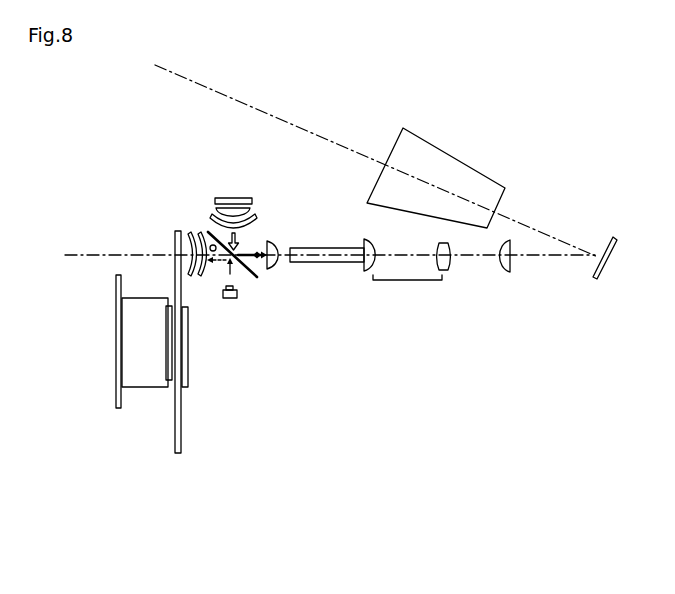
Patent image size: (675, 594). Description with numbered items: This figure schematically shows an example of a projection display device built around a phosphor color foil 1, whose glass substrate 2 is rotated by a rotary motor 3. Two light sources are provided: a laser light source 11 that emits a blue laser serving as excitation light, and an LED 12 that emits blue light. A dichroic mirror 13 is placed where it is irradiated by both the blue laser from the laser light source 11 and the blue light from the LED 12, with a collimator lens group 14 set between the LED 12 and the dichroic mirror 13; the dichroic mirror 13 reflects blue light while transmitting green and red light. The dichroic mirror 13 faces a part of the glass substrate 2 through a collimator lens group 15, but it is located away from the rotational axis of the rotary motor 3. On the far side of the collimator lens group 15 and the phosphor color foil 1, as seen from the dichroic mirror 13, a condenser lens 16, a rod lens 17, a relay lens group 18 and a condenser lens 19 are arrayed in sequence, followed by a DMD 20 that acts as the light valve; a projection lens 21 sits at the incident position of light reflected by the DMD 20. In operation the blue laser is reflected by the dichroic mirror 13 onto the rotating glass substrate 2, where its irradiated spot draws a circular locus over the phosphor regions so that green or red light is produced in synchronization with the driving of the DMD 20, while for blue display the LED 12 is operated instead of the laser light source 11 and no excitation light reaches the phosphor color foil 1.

The phosphor color foil 1 is at (148, 470).
The glass substrate 2 is at (177, 233).
The rotary motor 3 is at (140, 298).
The laser light source 11 is at (230, 299).
The LED 12 is at (238, 197).
The dichroic mirror 13 is at (208, 231).
The collimator lens group 14 is at (260, 216).
The collimator lens group 15 is at (204, 278).
The condenser lens 16 is at (277, 267).
The rod lens 17 is at (337, 262).
The relay lens group 18 is at (410, 280).
The condenser lens 19 is at (503, 272).
The DMD (digital micromirror device) 20 is at (607, 252).
The projection lens 21 is at (440, 150).